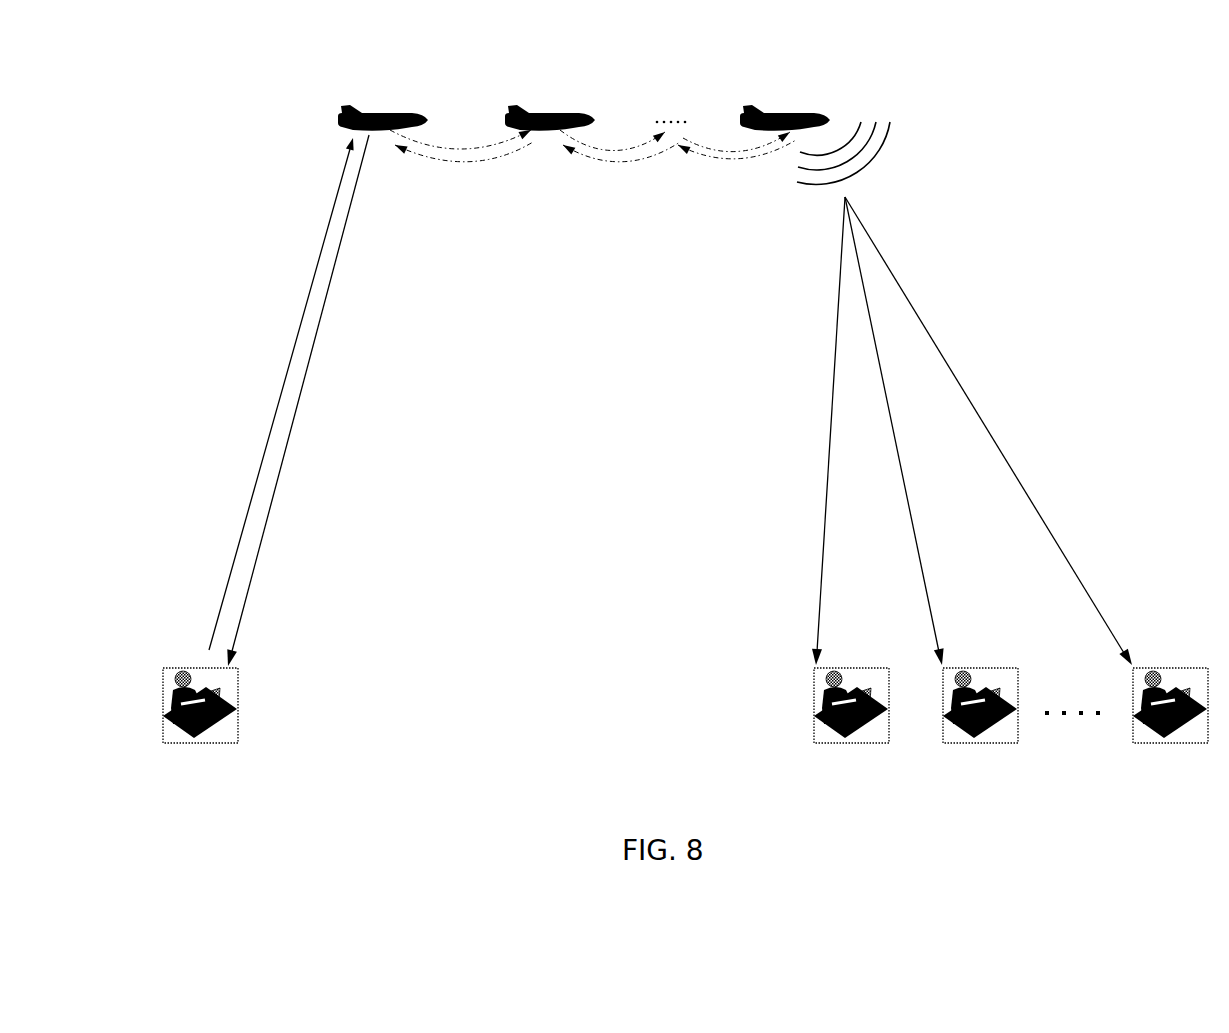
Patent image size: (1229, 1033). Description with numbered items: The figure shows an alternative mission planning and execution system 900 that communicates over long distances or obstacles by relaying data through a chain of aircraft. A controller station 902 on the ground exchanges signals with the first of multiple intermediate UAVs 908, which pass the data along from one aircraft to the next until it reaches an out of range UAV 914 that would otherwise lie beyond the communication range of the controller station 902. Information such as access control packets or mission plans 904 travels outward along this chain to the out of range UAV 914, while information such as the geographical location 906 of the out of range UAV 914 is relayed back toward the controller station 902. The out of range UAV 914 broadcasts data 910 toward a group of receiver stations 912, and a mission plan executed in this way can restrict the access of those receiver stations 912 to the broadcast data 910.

The mission planning and execution system 900 is at (679, 781).
The controller station 902 is at (173, 667).
The mission plans 904 is at (265, 440).
The geographical location 906 is at (298, 400).
The intermediate UAVs 908 is at (505, 112).
The data 910 is at (835, 347).
The receiving user terminals 912 is at (1133, 668).
The out of range UAV 914 is at (775, 105).